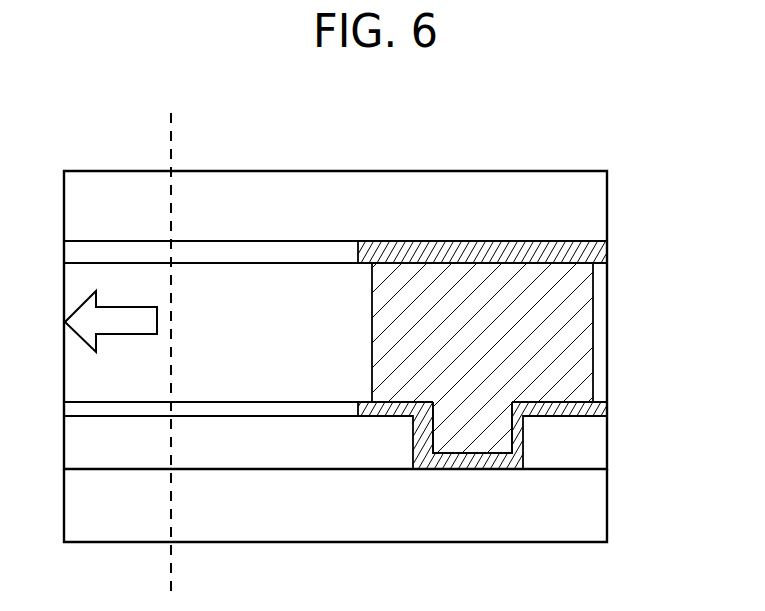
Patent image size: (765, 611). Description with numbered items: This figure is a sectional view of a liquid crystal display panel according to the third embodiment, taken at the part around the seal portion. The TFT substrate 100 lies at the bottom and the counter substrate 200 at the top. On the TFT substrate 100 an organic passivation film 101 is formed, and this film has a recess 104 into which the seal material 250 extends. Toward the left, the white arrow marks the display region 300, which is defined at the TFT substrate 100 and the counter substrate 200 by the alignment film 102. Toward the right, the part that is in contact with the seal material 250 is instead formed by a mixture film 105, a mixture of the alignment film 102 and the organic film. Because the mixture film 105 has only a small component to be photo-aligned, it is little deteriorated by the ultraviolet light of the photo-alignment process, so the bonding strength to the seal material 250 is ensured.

The TFT substrate 100 is at (597, 512).
The organic passivation film 101 is at (597, 456).
The alignment film 102 is at (306, 255).
The recess 104 is at (465, 423).
The mixture film 105 is at (607, 252).
The counter substrate 200 is at (597, 212).
The seal material 250 is at (573, 343).
The display region 300 is at (120, 340).